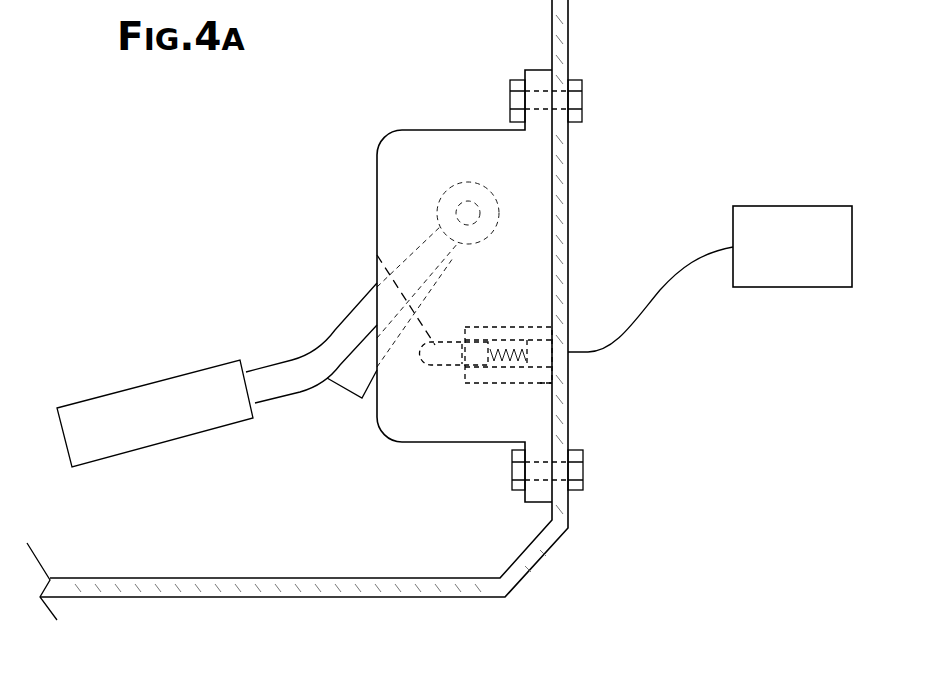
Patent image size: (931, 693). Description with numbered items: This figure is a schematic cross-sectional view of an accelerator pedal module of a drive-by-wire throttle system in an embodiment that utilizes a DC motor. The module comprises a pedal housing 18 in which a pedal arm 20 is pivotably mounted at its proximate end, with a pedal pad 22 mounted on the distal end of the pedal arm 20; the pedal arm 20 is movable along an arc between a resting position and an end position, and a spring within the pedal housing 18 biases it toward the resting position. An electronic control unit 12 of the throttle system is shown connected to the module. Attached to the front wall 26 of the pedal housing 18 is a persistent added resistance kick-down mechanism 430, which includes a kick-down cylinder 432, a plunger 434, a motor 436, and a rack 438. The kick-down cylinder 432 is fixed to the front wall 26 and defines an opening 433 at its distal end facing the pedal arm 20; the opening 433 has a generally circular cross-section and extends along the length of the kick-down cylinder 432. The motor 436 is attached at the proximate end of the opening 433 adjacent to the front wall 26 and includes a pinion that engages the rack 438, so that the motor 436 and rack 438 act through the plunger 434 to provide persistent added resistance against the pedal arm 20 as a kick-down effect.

The electronic control unit 12 is at (765, 206).
The pedal housing 18 is at (380, 143).
The pedal arm 20 is at (337, 323).
The pedal pad 22 is at (140, 385).
The front wall 26 is at (568, 398).
The kick-down mechanism 430 is at (545, 318).
The kick-down cylinder 432 is at (508, 326).
The opening 433 is at (460, 367).
The plunger 434 is at (369, 254).
The motor 436 is at (540, 383).
The rack 438 is at (508, 383).